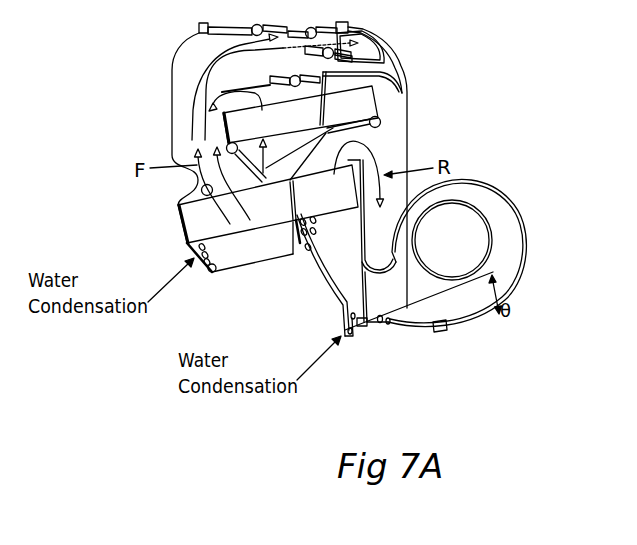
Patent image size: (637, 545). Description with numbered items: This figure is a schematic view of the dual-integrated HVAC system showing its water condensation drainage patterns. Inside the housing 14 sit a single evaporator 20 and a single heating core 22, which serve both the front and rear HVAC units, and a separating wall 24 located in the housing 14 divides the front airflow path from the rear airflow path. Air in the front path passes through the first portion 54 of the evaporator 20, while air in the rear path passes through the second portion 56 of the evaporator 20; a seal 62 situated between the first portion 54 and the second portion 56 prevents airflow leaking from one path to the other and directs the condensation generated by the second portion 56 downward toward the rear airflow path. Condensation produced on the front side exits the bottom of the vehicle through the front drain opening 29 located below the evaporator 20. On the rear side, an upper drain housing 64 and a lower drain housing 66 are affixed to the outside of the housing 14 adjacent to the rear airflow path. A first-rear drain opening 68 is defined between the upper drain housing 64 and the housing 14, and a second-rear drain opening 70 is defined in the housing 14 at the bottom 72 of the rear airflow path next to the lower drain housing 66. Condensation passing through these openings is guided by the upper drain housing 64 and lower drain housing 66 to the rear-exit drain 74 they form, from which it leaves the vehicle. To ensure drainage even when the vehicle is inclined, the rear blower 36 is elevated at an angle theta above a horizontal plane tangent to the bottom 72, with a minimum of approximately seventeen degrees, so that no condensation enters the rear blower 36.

The housing 14 is at (526, 238).
The evaporator 20 is at (180, 235).
The heating core 22 is at (362, 100).
The separating wall 24 is at (381, 122).
The front drain opening 29 is at (213, 275).
The rear blower 36 is at (483, 210).
The first portion of the evaporator 54 is at (192, 220).
The second portion of the evaporator 56 is at (345, 182).
The seal 62 is at (283, 202).
The upper drain housing 64 is at (323, 292).
The lower drain housing 66 is at (370, 322).
The first-rear drain opening 68 is at (300, 250).
The second-rear drain opening 70 is at (389, 320).
The bottom of the rear airflow path 72 is at (452, 318).
The rear-exit drain 74 is at (352, 336).